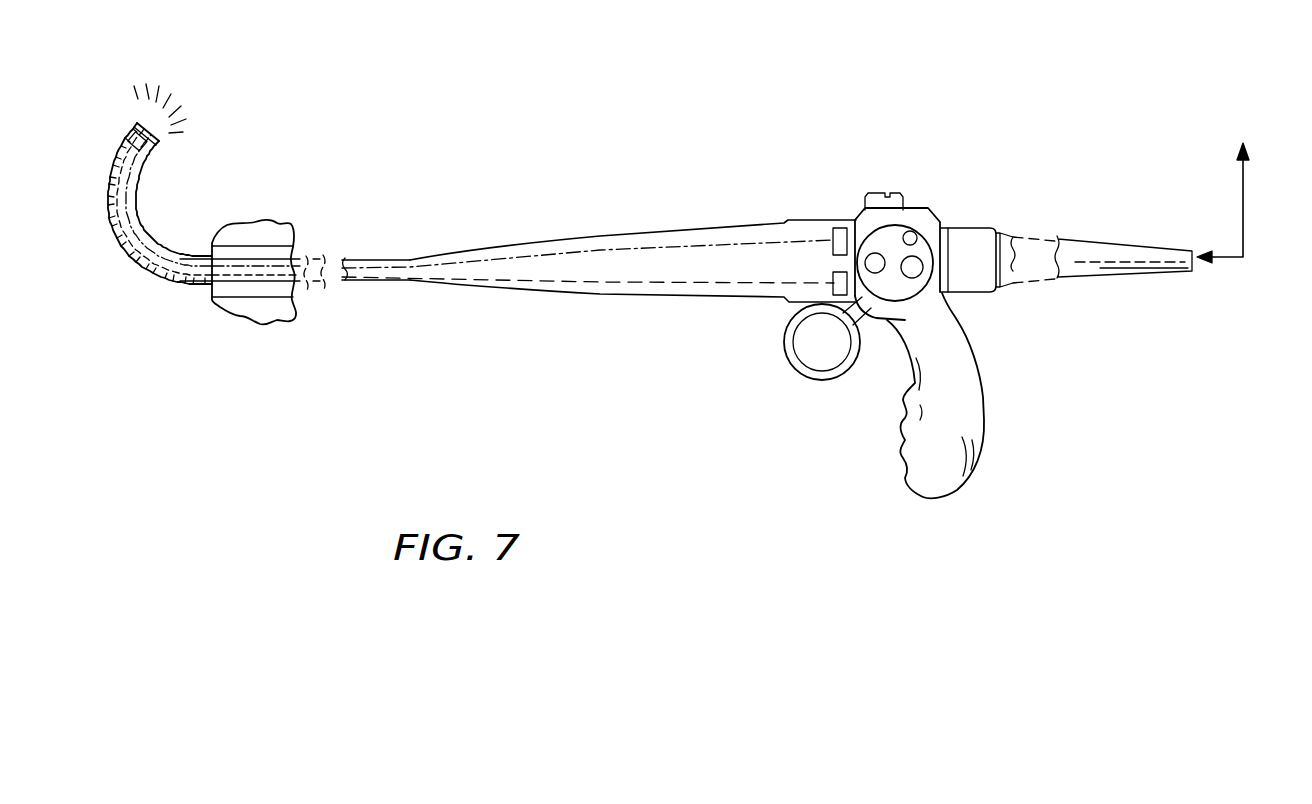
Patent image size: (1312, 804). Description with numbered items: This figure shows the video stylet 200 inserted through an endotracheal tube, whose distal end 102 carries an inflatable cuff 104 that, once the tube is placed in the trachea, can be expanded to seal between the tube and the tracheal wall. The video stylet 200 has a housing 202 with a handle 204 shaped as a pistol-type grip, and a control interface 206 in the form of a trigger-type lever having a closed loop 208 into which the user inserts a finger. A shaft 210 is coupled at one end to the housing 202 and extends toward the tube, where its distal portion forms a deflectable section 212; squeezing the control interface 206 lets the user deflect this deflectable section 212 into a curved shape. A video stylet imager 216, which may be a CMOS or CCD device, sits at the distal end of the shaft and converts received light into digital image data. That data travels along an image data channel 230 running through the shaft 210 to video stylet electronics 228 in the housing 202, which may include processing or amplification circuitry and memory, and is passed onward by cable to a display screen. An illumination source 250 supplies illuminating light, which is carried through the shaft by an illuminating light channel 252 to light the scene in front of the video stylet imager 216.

The distal end 102 is at (226, 292).
The inflatable cuff 104 is at (272, 224).
The video stylet 200 is at (759, 181).
The housing 202 is at (672, 232).
The handle 204 is at (984, 427).
The control interface 206 is at (793, 386).
The closed loop 208 is at (828, 380).
The shaft 210 is at (383, 281).
The deflectable section 212 is at (135, 195).
The video stylet imager 216 is at (146, 146).
The video stylet electronics 228 is at (833, 290).
The image data channel 230 is at (578, 284).
The illumination source 250 is at (843, 229).
The illuminating light channel 252 is at (512, 255).